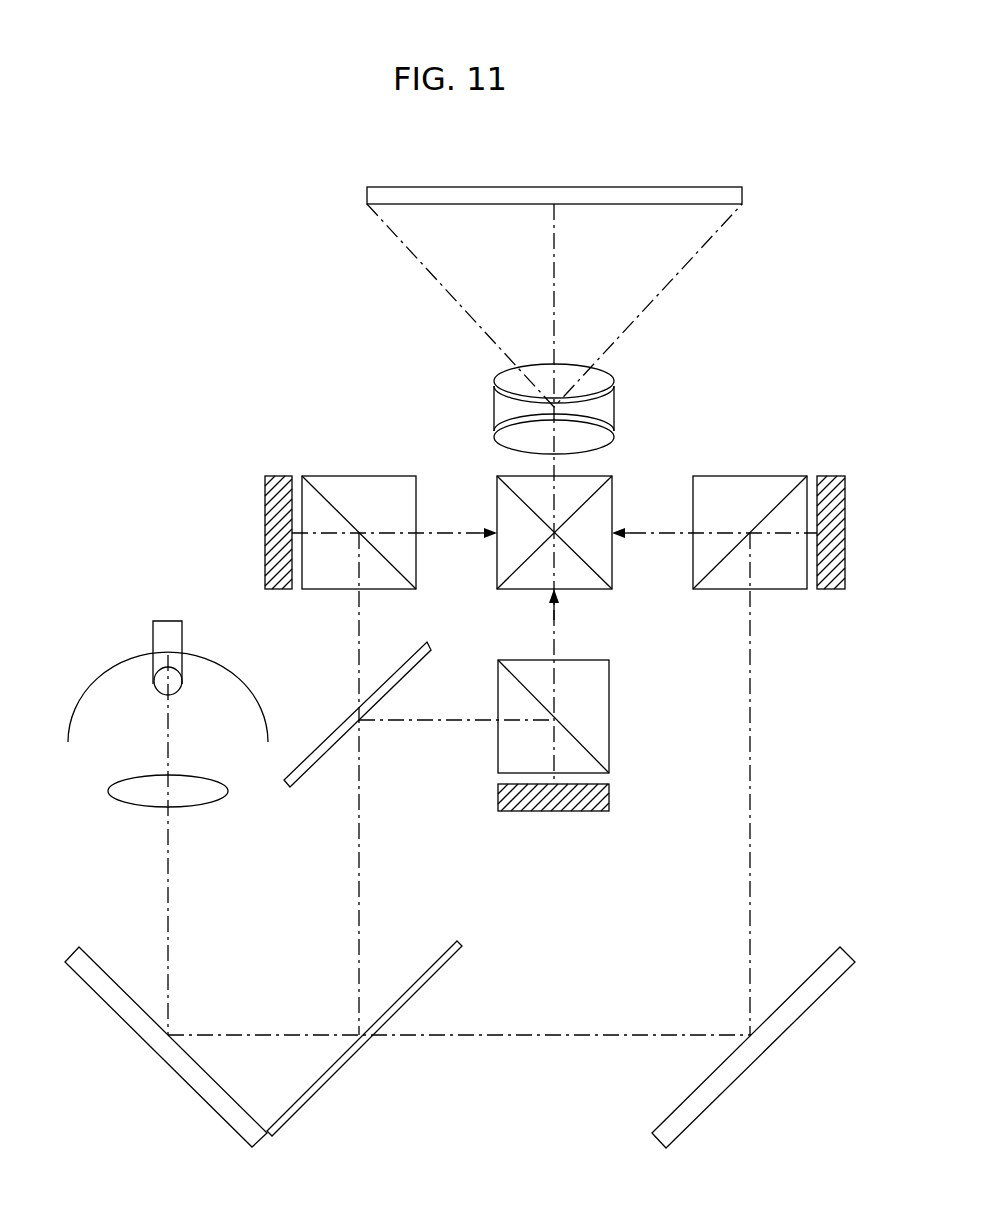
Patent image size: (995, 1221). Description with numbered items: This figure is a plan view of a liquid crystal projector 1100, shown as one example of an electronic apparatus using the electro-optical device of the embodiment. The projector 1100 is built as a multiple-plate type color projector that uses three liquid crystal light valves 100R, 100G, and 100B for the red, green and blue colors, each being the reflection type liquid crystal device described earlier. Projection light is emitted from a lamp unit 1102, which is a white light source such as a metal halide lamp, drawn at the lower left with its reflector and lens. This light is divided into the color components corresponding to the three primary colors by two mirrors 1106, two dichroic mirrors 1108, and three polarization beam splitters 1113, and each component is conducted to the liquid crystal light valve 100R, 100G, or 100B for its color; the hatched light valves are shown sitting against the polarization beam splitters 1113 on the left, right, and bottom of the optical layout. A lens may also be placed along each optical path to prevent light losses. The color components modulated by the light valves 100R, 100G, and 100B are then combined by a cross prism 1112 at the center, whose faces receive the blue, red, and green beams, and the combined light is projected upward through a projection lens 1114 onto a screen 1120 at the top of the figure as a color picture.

The liquid crystal projector 1100 is at (310, 170).
The lamp unit 1102 is at (90, 683).
The mirrors 1106 is at (172, 1052).
The dichroic mirrors 1108 is at (315, 762).
The cross prism 1112 is at (588, 468).
The polarization beam splitters 1113 is at (352, 490).
The projection lens 1114 is at (484, 453).
The screen 1120 is at (680, 194).
The liquid crystal light valve for B 100B is at (280, 584).
The liquid crystal light valve for R 100R is at (838, 586).
The liquid crystal light valve for G 100G is at (572, 812).